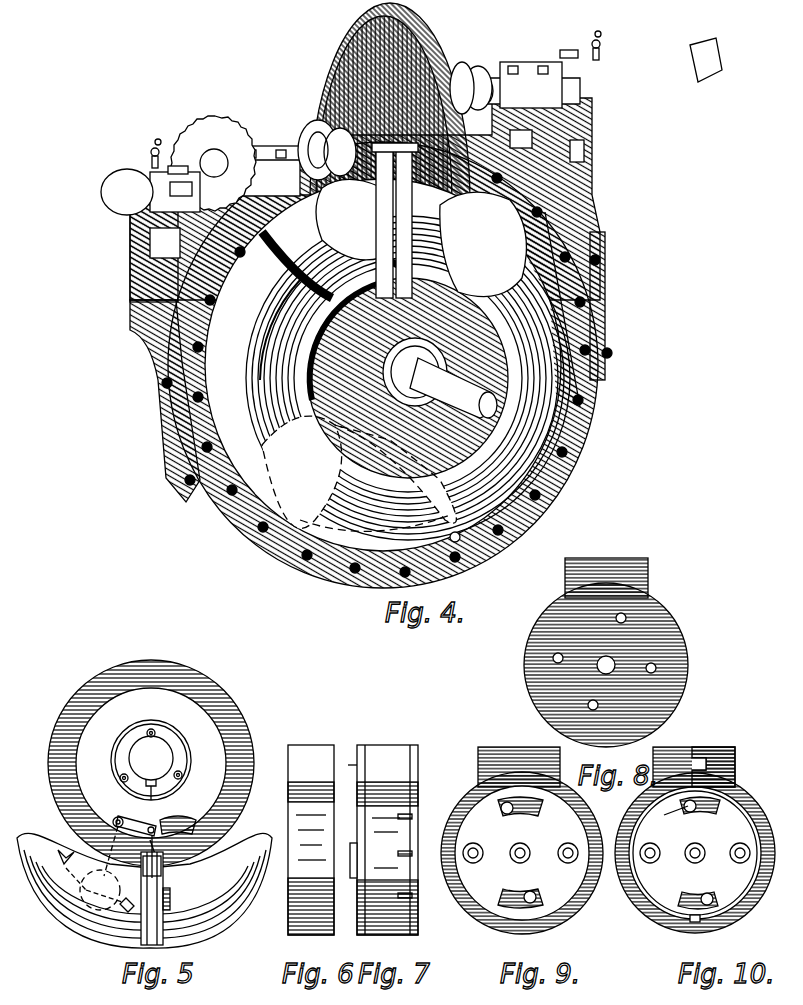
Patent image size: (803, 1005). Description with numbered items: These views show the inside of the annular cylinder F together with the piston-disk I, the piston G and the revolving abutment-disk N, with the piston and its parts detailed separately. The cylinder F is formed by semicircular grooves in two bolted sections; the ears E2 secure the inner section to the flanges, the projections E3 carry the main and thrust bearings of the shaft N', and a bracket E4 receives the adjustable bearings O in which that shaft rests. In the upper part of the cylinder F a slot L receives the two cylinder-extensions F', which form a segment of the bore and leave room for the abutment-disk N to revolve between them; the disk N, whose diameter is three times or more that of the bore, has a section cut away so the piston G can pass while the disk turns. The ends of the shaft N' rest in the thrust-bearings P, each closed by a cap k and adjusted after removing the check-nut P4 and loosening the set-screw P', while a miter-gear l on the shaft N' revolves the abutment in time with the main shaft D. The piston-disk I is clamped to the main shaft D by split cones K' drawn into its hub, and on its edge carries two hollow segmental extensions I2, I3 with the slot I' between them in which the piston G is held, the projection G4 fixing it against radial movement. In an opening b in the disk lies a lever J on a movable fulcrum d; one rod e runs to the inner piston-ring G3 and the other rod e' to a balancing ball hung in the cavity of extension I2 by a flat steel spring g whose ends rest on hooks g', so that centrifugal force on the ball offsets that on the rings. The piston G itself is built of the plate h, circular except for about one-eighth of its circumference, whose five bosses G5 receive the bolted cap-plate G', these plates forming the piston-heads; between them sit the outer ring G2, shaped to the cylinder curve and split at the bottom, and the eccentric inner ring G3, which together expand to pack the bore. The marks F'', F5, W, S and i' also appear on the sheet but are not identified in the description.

In FIG. 4, the abutment-disk N is at (390, 200).
In FIG. 4, the abutment shaft N' is at (481, 240).
In FIG. 4, the ears E2 is at (165, 405).
In FIG. 4, the projections E3 is at (592, 180).
In FIG. 4, the bracket E4 is at (132, 278).
In FIG. 4, the annular cylinder F is at (408, 378).
In FIG. 4, the cylinder-extensions F' is at (275, 330).
In FIG. 4, the ring rim F'' is at (378, 341).
In FIG. 4, the recess F5 is at (470, 524).
In FIG. 4, the slot L is at (408, 378).
In FIG. 4, the band W is at (336, 265).
In FIG. 5, the piston-disk I is at (147, 763).
In FIG. 5, the slot I' is at (175, 898).
In FIG. 4, the segmental extension I2 is at (483, 244).
In FIG. 5, the segmental extension I2 is at (144, 890).
In FIG. 4, the segmental extension I3 is at (352, 219).
In FIG. 5, the segmental extension I3 is at (251, 848).
In FIG. 4, the adjustable bearings O is at (248, 148).
In FIG. 4, the coupling S is at (312, 122).
In FIG. 4, the miter-gear l is at (213, 156).
In FIG. 4, the thrust-bearings P is at (356, 97).
In FIG. 4, the set-screw P' is at (373, 78).
In FIG. 4, the check-nut P4 is at (723, 57).
In FIG. 4, the cap k is at (560, 52).
In FIG. 5, the cone K' is at (139, 760).
In FIG. 5, the main shaft D is at (151, 768).
In FIG. 5, the lever J is at (144, 847).
In FIG. 5, the opening b is at (186, 824).
In FIG. 5, the movable fulcrum d is at (150, 826).
In FIG. 5, the rod e is at (173, 861).
In FIG. 5, the rod e' is at (111, 839).
In FIG. 5, the flat steel spring g is at (84, 898).
In FIG. 5, the hooks g' is at (96, 873).
In FIG. 5, the piston G is at (152, 890).
In FIG. 7, the piston G is at (387, 840).
In FIG. 7, the plate G' is at (421, 844).
In FIG. 8, the plate G' is at (610, 652).
In FIG. 10, the outer ring G2 is at (668, 764).
In FIG. 6, the inner ring G3 is at (311, 840).
In FIG. 10, the inner ring G3 is at (676, 817).
In FIG. 7, the projection G4 is at (352, 843).
In FIG. 9, the bosses G5 is at (522, 840).
In FIG. 7, the plate h is at (348, 764).
In FIG. 10, the insert i' is at (713, 760).